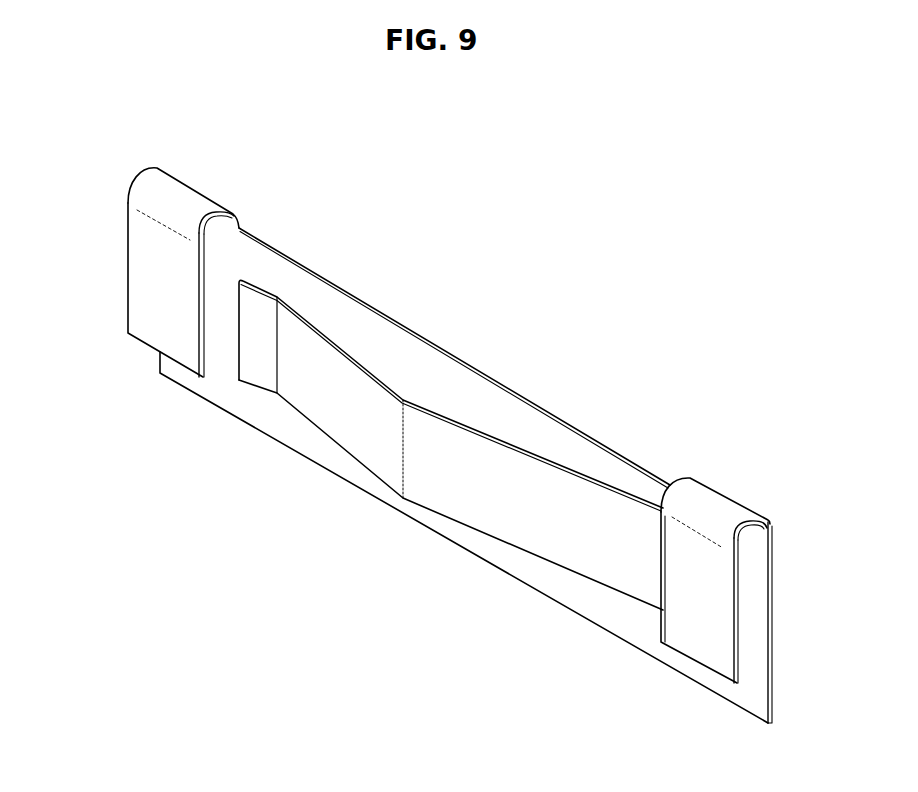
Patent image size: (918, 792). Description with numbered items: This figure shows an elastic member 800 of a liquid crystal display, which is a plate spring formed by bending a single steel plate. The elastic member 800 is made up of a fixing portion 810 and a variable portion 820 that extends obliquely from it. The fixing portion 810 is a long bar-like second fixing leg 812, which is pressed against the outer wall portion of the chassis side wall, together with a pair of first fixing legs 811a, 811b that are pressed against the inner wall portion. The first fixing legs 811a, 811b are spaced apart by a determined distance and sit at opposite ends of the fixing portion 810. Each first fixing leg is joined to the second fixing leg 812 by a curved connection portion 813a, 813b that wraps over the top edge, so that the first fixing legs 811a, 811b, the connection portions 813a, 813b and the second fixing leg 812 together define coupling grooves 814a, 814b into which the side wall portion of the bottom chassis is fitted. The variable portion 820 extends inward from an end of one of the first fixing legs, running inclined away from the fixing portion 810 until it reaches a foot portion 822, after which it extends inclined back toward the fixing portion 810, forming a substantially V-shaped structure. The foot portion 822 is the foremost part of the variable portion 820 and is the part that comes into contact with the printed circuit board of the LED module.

The elastic member 800 is at (178, 97).
The fixing portion 810 is at (464, 475).
The second fixing leg 812 is at (543, 405).
The first fixing leg 811a is at (718, 599).
The first fixing leg 811b is at (140, 258).
The connection portion 813a is at (722, 515).
The connection portion 813b is at (190, 203).
The coupling groove 814a is at (750, 573).
The coupling groove 814b is at (210, 269).
The variable portion 820 is at (451, 445).
The foot portion 822 is at (400, 455).